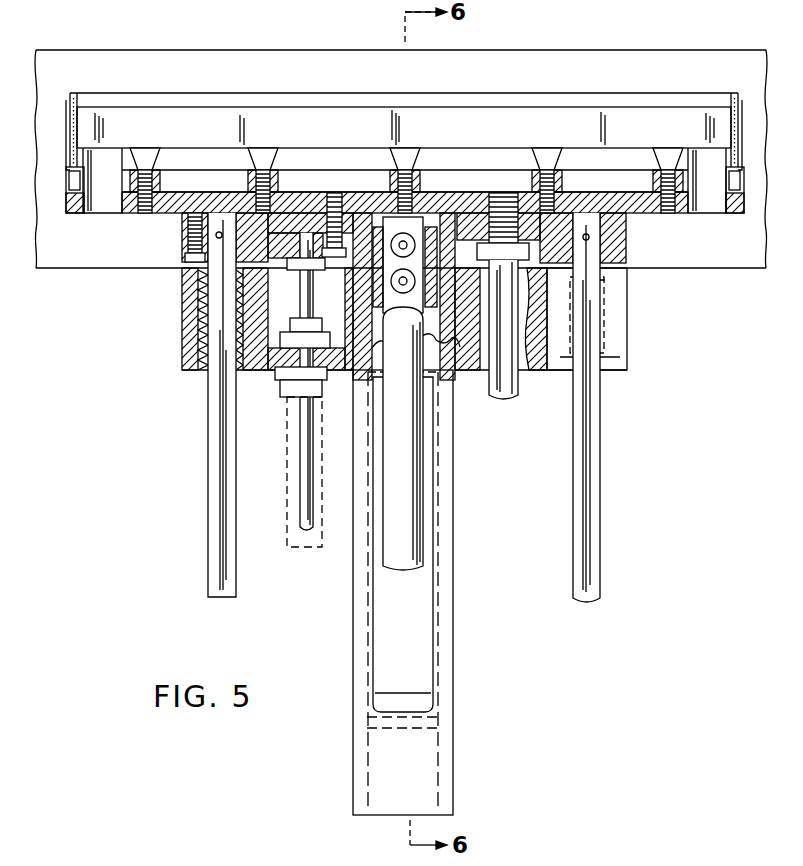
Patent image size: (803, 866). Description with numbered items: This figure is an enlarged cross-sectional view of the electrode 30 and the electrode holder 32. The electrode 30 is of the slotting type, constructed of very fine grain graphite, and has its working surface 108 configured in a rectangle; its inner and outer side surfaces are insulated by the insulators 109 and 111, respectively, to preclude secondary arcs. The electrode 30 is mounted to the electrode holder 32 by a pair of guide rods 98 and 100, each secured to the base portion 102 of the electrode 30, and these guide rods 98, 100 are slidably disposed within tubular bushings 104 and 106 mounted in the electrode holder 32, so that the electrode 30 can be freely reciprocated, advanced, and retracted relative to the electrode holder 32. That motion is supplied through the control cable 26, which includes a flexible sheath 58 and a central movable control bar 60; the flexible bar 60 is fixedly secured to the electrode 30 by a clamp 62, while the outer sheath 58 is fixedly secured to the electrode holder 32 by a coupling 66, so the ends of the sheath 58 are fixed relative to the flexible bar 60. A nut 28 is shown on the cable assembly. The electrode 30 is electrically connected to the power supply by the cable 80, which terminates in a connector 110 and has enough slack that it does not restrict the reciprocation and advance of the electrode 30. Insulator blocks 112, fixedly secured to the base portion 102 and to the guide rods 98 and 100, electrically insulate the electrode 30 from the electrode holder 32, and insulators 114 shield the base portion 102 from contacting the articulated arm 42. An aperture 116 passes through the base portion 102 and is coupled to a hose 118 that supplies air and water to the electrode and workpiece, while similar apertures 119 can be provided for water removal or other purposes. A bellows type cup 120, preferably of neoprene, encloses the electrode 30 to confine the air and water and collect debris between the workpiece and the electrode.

The bellows type cup 120 is at (80, 50).
The working surface 108 is at (77, 97).
The insulator 111 is at (67, 102).
The insulator 109 is at (145, 115).
The apertures 119 is at (117, 160).
The base portion 102 is at (79, 216).
The connector 110 is at (417, 213).
The insulators 114 is at (385, 208).
The insulator blocks 112 is at (182, 238).
The aperture 116 is at (508, 207).
The hose 118 is at (518, 387).
The electrode 30 is at (642, 248).
The tubular bushing 104 is at (195, 327).
The guide rod 98 is at (218, 448).
The control bar 60 is at (305, 297).
The clamp 62 is at (315, 273).
The coupling 66 is at (290, 393).
The nut 28 is at (281, 389).
The flexible sheath 58 is at (287, 522).
The cable 26 is at (281, 447).
The articulated arm 42 is at (453, 758).
The cable 80 is at (420, 498).
The electrode holder 32 is at (623, 353).
The tubular bushing 106 is at (627, 298).
The guide rod 100 is at (592, 428).